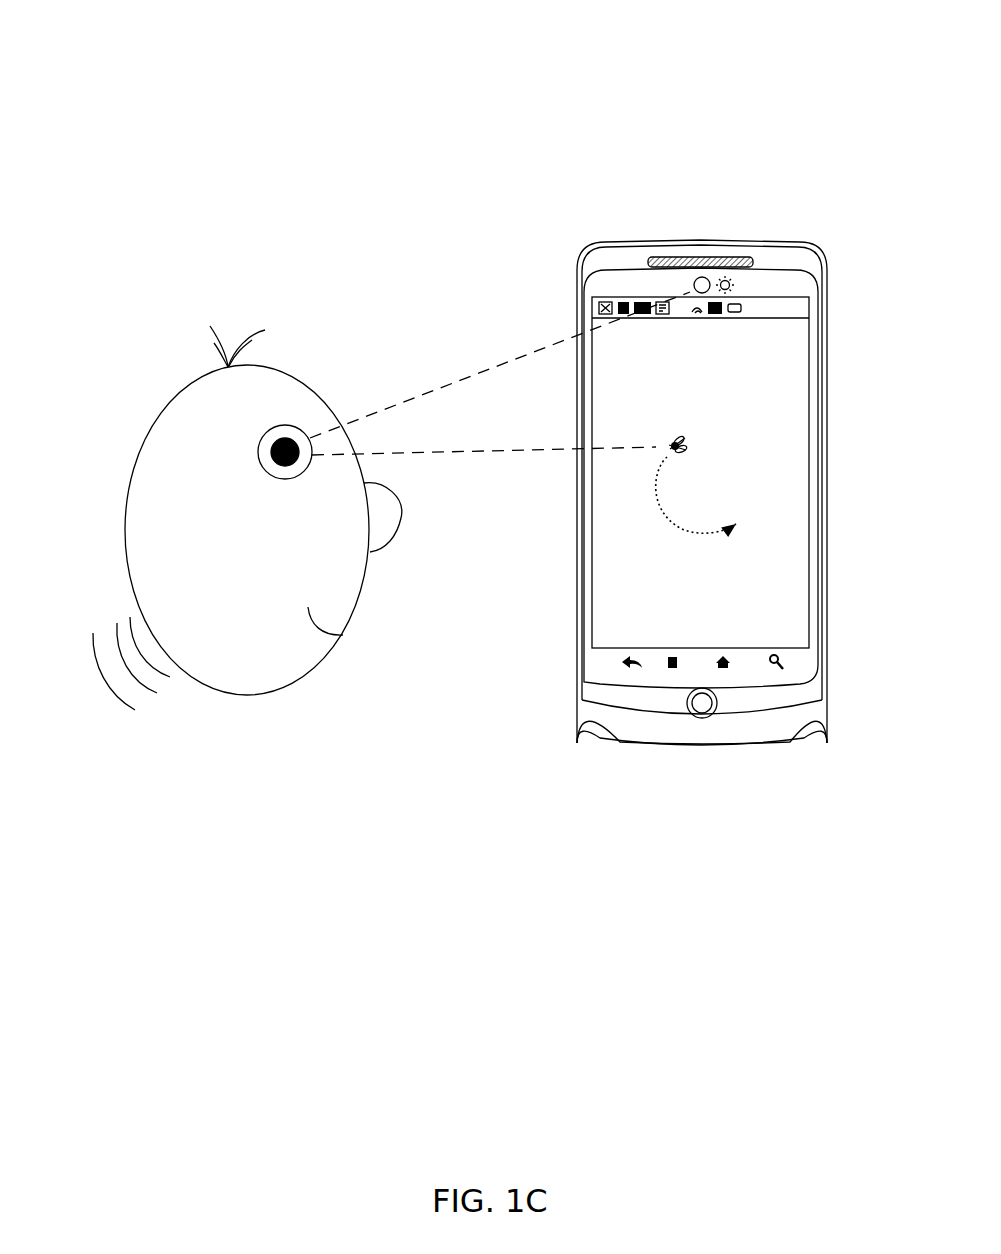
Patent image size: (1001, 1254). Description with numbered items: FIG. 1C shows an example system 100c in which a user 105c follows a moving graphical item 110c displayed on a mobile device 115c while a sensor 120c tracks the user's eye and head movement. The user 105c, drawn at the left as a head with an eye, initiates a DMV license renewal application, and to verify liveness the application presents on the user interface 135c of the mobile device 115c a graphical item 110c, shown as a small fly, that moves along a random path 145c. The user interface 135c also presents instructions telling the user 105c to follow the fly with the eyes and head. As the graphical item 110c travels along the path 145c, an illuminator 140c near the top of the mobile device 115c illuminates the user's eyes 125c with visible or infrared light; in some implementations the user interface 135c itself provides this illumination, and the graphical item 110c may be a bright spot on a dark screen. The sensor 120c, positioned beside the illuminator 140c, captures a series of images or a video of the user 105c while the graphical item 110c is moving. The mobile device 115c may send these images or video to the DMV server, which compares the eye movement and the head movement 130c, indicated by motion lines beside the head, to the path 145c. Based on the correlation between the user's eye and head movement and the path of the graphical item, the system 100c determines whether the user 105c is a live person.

The system 100c is at (107, 56).
The user 105c is at (156, 414).
The graphical item 110c is at (710, 435).
The mobile device 115c is at (597, 248).
The sensor 120c is at (696, 262).
The eyes 125c is at (302, 427).
The head movement 130c is at (98, 606).
The user interface 135c is at (825, 538).
The illuminator 140c is at (747, 268).
The path 145c is at (690, 502).